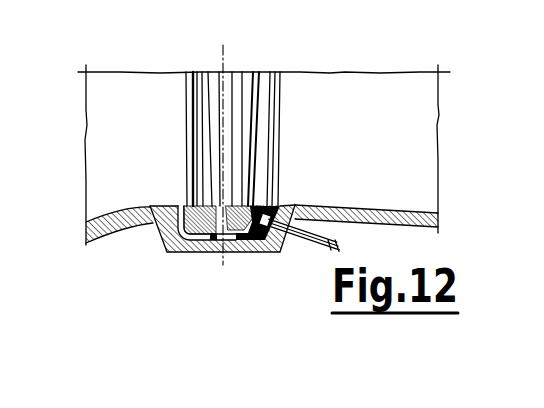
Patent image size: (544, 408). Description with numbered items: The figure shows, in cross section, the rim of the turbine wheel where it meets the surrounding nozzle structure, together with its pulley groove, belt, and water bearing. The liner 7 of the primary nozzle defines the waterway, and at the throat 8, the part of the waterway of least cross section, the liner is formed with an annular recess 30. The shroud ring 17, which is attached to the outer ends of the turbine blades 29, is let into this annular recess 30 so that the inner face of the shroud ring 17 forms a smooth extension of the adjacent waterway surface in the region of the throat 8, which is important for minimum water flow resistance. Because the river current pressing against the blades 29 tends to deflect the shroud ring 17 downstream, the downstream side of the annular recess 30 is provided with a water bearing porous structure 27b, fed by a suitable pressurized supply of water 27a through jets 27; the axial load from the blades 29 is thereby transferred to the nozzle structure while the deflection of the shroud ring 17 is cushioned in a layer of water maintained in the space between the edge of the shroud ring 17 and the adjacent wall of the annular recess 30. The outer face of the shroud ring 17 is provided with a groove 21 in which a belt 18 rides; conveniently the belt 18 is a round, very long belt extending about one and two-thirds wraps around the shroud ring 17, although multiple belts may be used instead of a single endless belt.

The liner 7 is at (116, 230).
The throat 8 is at (285, 207).
The shroud ring 17 is at (184, 205).
The belt 18 is at (213, 243).
The groove 21 is at (222, 203).
The jets 27 is at (280, 234).
The pressurized supply of water 27a is at (338, 246).
The water bearing porous structure 27b is at (266, 205).
The blades 29 is at (258, 112).
The annular recess 30 is at (157, 204).